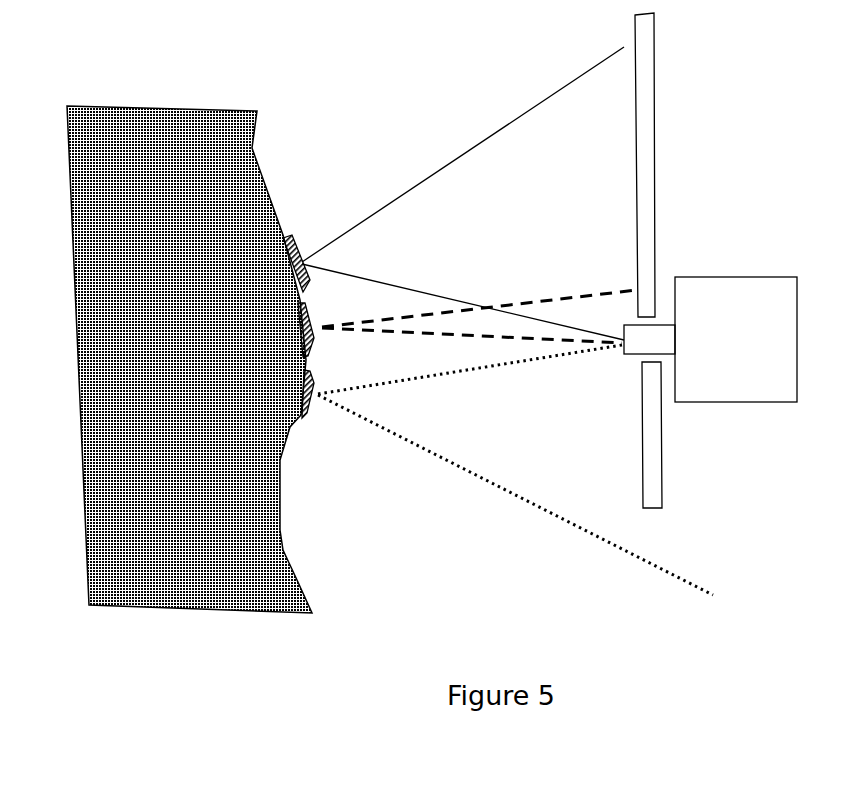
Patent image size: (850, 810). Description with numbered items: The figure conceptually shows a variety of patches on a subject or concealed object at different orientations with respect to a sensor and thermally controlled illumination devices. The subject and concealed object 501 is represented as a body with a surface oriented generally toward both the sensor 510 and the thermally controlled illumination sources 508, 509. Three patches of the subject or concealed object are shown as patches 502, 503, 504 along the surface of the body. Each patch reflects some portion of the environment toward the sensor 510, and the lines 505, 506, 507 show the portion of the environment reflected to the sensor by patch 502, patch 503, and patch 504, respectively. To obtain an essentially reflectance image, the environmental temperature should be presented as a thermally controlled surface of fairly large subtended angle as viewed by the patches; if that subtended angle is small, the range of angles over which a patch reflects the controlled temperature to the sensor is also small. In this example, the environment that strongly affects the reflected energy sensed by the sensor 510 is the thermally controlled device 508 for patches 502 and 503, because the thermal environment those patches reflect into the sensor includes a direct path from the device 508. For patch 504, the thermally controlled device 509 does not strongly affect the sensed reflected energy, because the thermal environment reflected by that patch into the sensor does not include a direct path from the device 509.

The subject and concealed object 501 is at (243, 108).
The patch 502 is at (302, 236).
The patch 503 is at (310, 318).
The patch 504 is at (305, 415).
The lines showing portion of environment reflected to the sensor 505 is at (452, 140).
The lines showing portion of environment reflected to the sensor 506 is at (592, 295).
The lines showing portion of environment reflected to the sensor 507 is at (477, 373).
The thermally controlled illumination source 508 is at (655, 188).
The thermally controlled illumination source 509 is at (663, 487).
The sensor 510 is at (763, 277).